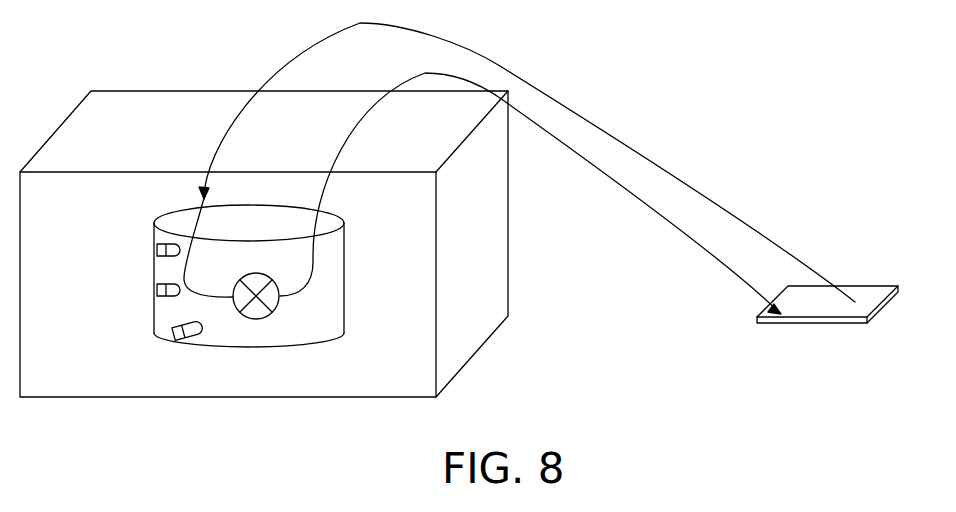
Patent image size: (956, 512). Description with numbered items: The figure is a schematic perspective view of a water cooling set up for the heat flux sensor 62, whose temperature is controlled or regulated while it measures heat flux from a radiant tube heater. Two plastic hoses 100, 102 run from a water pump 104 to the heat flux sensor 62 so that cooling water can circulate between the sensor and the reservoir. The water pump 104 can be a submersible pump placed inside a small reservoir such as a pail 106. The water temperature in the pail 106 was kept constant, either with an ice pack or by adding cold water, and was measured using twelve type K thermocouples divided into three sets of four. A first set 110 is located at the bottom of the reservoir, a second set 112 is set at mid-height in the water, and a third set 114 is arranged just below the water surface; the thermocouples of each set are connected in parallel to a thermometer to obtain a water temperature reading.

The heat flux sensor 62 is at (810, 323).
The plastic hose 100 is at (650, 210).
The plastic hose 102 is at (699, 191).
The water pump 104 is at (256, 320).
The pail 106 is at (327, 298).
The first set of thermocouples 110 is at (169, 337).
The second set of thermocouples 112 is at (157, 297).
The third set of thermocouples 114 is at (157, 250).